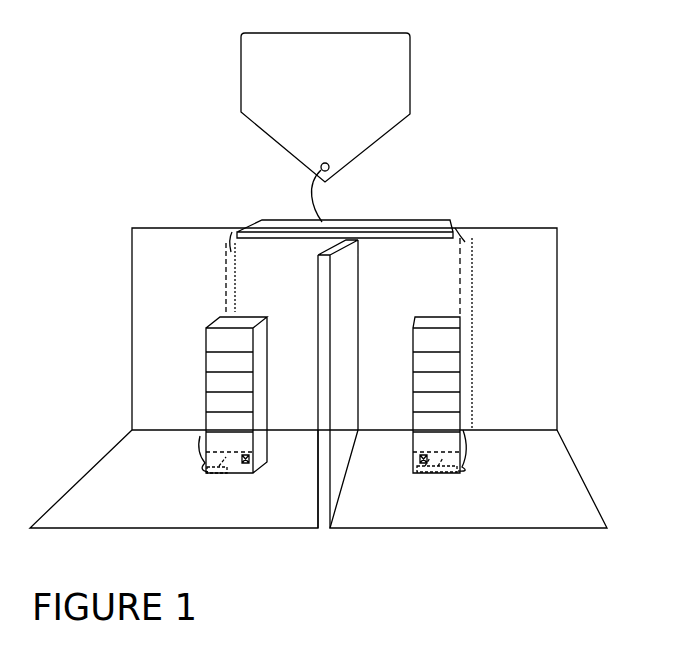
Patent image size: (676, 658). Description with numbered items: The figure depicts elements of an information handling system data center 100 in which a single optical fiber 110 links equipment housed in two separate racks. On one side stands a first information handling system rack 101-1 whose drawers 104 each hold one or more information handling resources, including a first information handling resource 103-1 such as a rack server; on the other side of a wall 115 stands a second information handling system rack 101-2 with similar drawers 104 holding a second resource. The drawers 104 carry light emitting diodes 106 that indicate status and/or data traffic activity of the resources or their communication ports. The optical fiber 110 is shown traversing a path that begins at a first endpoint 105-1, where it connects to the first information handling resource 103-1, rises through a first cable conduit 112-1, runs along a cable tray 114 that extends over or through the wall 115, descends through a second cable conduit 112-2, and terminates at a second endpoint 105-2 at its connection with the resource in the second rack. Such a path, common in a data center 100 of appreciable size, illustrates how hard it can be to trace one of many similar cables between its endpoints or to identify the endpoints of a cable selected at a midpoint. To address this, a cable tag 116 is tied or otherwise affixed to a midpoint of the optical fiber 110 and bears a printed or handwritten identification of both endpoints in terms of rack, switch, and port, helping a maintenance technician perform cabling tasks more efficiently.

The information handling system data center 100 is at (495, 130).
The first information handling system rack 101-1 is at (264, 317).
The second information handling system rack 101-2 is at (420, 317).
The first information handling resource 103-1 is at (239, 473).
The drawer 104 is at (210, 362).
The first endpoint 105-1 is at (212, 473).
The second endpoint 105-2 is at (450, 471).
The light emitting diodes 106 is at (251, 458).
The optical fiber 110 is at (229, 246).
The first cable conduit 112-1 is at (226, 299).
The second cable conduit 112-2 is at (472, 288).
The cable tray 114 is at (373, 220).
The wall 115 is at (318, 385).
The cable tag 116 is at (378, 33).